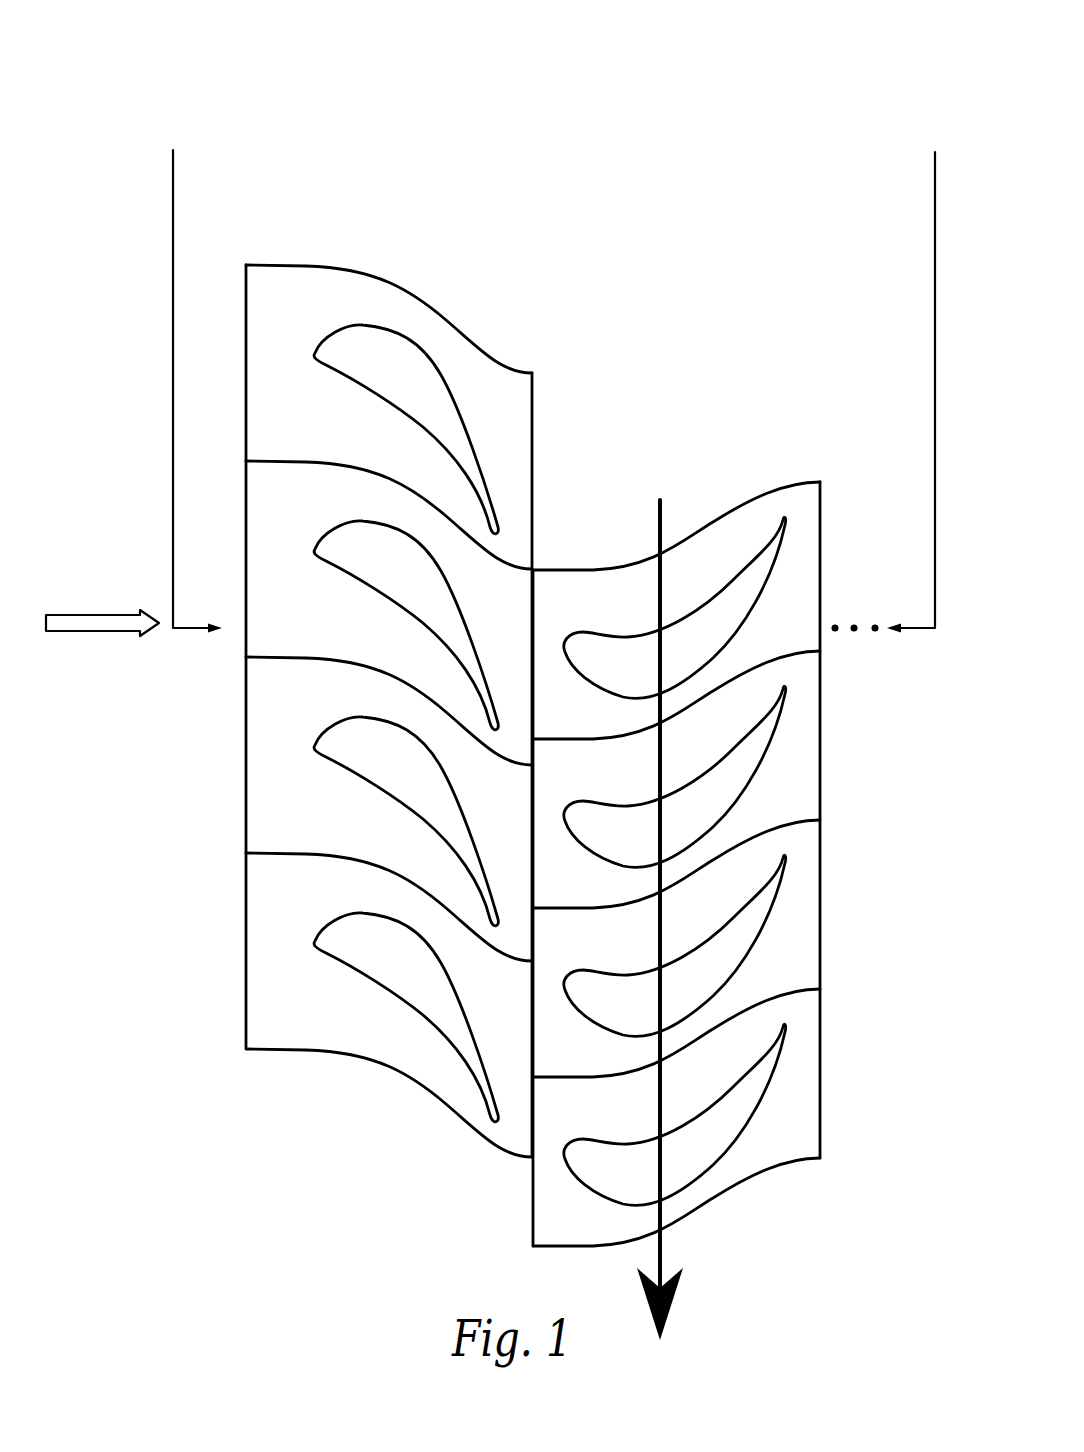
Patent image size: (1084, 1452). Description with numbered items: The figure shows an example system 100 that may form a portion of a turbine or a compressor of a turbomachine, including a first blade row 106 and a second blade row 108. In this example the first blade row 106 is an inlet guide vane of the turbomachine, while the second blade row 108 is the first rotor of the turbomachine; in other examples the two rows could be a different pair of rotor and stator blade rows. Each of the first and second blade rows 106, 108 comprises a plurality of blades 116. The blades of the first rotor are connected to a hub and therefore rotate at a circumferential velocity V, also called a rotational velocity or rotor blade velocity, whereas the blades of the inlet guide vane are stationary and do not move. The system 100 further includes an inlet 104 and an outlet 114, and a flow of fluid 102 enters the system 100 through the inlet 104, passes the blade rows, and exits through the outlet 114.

The system 100 is at (376, 63).
The flow of fluid 102 is at (105, 616).
The inlet 104 is at (170, 322).
The first blade row 106 is at (380, 266).
The second blade row 108 is at (746, 484).
The outlet 114 is at (935, 257).
The blades 116 is at (420, 388).